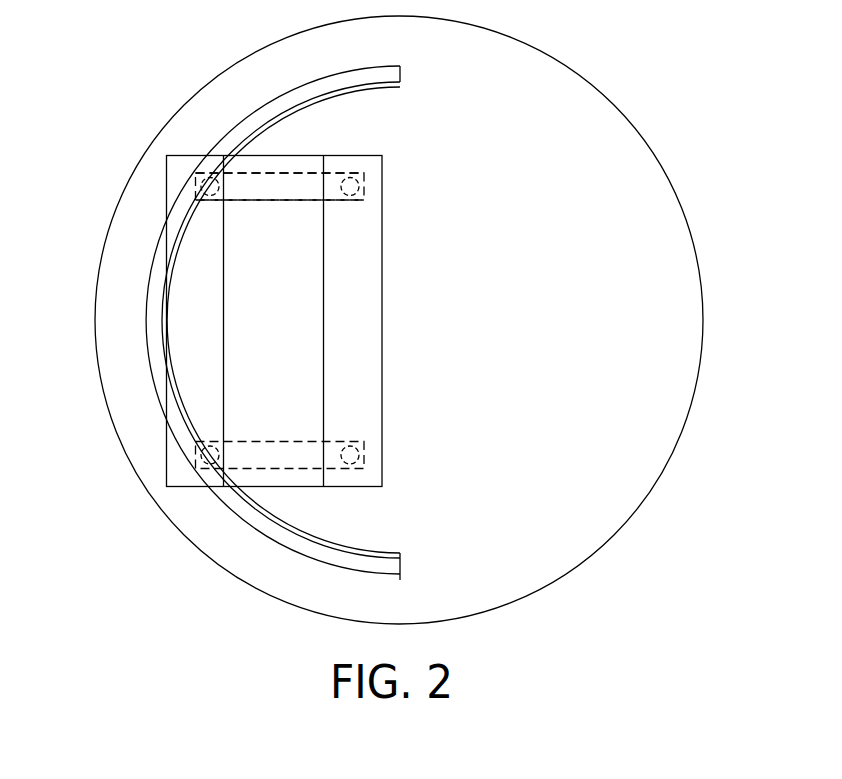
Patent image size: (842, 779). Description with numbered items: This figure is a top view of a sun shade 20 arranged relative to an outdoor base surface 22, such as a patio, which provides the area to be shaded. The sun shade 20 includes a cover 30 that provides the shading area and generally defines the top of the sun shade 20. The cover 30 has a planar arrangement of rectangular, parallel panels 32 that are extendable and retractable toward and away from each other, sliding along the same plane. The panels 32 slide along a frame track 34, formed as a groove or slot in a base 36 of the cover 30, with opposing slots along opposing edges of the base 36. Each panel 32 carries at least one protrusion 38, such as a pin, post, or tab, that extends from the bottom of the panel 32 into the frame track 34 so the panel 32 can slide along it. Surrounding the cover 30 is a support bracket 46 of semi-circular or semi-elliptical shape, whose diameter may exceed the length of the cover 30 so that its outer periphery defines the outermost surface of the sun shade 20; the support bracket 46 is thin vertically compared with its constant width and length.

The sun shade 20 is at (152, 219).
The base surface 22 is at (316, 592).
The cover 30 is at (200, 395).
The panels 32 is at (188, 298).
The frame track 34 is at (202, 189).
The base 36 is at (270, 165).
The protrusion 38 is at (350, 173).
The support bracket 46 is at (157, 347).